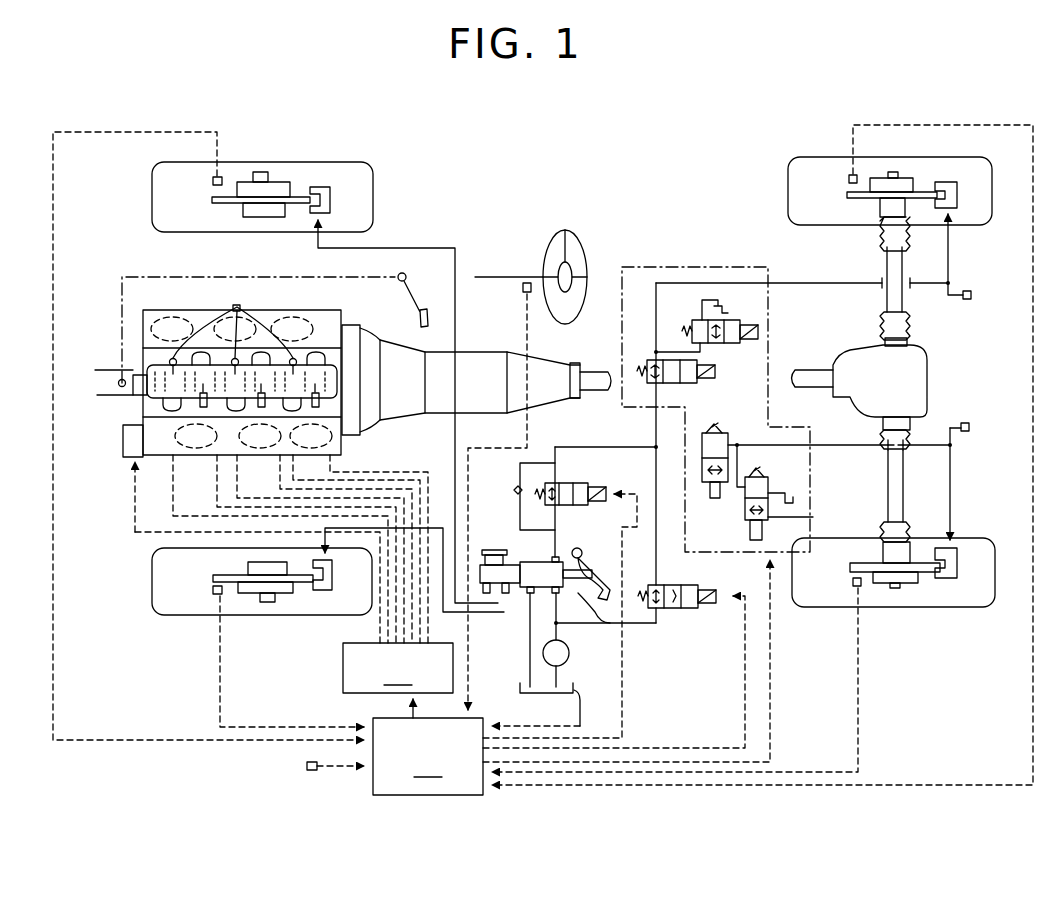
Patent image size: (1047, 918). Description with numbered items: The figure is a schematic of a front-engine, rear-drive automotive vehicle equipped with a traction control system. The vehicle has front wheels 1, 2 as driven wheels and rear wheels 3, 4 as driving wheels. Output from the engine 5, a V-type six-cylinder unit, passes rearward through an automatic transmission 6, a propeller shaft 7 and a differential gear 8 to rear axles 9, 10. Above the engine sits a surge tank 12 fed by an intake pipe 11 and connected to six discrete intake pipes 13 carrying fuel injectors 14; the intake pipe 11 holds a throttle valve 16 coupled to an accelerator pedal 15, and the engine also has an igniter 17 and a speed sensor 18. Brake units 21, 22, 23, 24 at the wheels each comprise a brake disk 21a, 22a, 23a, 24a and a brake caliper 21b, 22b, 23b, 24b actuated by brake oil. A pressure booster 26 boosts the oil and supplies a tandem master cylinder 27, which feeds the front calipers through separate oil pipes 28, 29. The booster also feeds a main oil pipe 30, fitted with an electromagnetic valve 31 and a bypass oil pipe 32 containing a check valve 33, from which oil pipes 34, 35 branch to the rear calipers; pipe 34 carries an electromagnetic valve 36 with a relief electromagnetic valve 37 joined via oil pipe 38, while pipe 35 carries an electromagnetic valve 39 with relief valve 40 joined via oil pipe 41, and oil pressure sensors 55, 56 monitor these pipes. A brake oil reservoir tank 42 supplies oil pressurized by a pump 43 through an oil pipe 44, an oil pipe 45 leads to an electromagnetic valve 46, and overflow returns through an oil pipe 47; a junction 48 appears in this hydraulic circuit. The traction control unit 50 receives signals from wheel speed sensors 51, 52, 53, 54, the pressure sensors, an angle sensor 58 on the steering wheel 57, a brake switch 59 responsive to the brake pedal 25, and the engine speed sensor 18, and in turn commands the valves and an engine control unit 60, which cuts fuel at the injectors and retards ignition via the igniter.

The front wheel 1 is at (157, 548).
The front wheel 2 is at (372, 190).
The rear wheel 3 is at (807, 607).
The rear wheel 4 is at (983, 161).
The engine 5 is at (141, 311).
The transmission 6 is at (478, 352).
The propeller shaft 7 is at (600, 367).
The differential gear 8 is at (927, 380).
The rear axle 9 is at (903, 480).
The rear axle 10 is at (885, 297).
The intake pipe 11 is at (118, 380).
The surge tank 12 is at (344, 356).
The discrete intake pipes 13 is at (340, 416).
The fuel injectors 14 is at (233, 326).
The accelerator pedal 15 is at (410, 290).
The throttle valve 16 is at (107, 372).
The igniter 17 is at (123, 441).
The speed sensor 18 is at (307, 766).
The brake unit 21 is at (286, 597).
The brake disk 21a is at (303, 587).
The brake caliper 21b is at (327, 590).
The brake unit 22 is at (300, 182).
The brake disk 22a is at (298, 213).
The brake caliper 22b is at (330, 192).
The brake unit 23 is at (933, 580).
The brake disk 23a is at (910, 575).
The brake caliper 23b is at (963, 562).
The brake unit 24 is at (926, 212).
The brake disk 24a is at (863, 203).
The brake caliper 24b is at (962, 205).
The brake pedal 25 is at (597, 580).
The pressure booster 26 is at (517, 555).
The master cylinder 27 is at (505, 594).
The oil pipe 28 is at (485, 675).
The oil pipe 29 is at (458, 433).
The main oil pipe 30 is at (560, 557).
The electromagnetic valve 31 is at (607, 487).
The bypass oil pipe 32 is at (520, 470).
The check valve 33 is at (514, 490).
The oil pipe 34 is at (852, 447).
The oil pipe 35 is at (768, 282).
The electromagnetic valve 36 is at (728, 438).
The electromagnetic valve 37 is at (813, 517).
The oil pipe 38 is at (745, 490).
The electromagnetic valve 39 is at (697, 383).
The electromagnetic valve 40 is at (742, 318).
The oil pipe 41 is at (700, 352).
The brake oil reservoir tank 42 is at (581, 716).
The pump 43 is at (573, 676).
The oil pipe 44 is at (558, 623).
The oil pipe 45 is at (640, 623).
The electromagnetic valve 46 is at (687, 608).
The oil pipe 47 is at (532, 662).
The hydraulic junction line 48 is at (653, 446).
The traction control unit 50 is at (460, 783).
The speed sensor 51 is at (213, 590).
The speed sensor 52 is at (213, 183).
The speed sensor 53 is at (857, 588).
The speed sensor 54 is at (849, 180).
The oil pressure sensor 55 is at (969, 425).
The oil pressure sensor 56 is at (971, 297).
The steering wheel 57 is at (574, 232).
The angle sensor 58 is at (533, 295).
The brake switch 59 is at (569, 649).
The engine control unit 60 is at (343, 672).